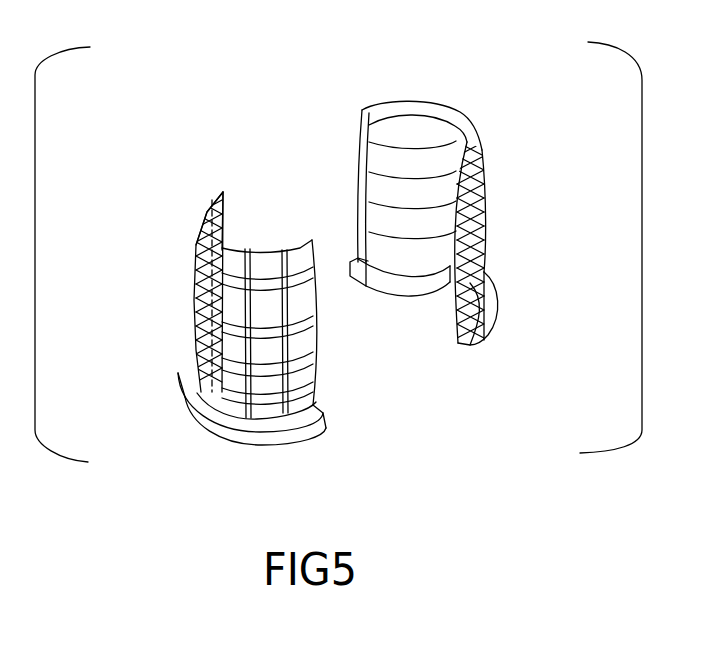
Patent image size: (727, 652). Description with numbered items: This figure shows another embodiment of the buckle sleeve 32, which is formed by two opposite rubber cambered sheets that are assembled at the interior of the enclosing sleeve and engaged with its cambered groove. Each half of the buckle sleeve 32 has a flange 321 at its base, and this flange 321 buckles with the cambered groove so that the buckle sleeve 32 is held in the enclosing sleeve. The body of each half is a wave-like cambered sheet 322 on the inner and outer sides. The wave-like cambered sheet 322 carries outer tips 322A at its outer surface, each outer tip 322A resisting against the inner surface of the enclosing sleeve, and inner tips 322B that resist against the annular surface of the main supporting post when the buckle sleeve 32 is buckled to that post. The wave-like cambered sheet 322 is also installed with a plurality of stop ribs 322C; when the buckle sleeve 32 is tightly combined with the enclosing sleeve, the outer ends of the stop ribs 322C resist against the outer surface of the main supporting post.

The buckle sleeve 32 is at (468, 245).
The flange 321 is at (463, 337).
The wave-like cambered sheet 322 is at (410, 103).
The outer tip 322A is at (193, 322).
The inner tip 322B is at (365, 143).
The stop rib 322C is at (197, 228).